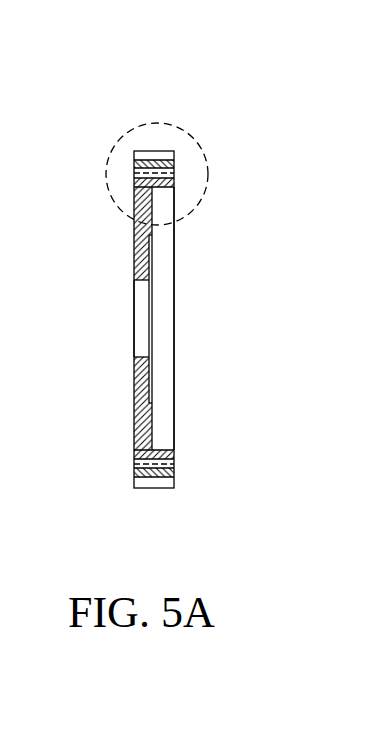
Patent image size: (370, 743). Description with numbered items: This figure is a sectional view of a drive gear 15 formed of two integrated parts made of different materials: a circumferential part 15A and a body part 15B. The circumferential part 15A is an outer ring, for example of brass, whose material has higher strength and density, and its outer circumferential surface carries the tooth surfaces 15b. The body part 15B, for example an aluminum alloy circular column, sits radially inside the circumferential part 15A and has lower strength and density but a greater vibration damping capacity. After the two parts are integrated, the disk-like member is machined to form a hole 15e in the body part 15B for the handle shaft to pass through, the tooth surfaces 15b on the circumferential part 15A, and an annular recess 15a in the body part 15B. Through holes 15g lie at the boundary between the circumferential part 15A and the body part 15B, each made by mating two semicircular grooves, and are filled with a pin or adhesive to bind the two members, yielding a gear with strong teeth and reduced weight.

The drive gear 15 is at (224, 135).
The circumferential part 15A is at (133, 160).
The body part 15B is at (133, 403).
The annular recess 15a is at (174, 442).
The tooth surfaces 15b is at (157, 153).
The hole 15e is at (133, 286).
The through holes 15g is at (173, 175).